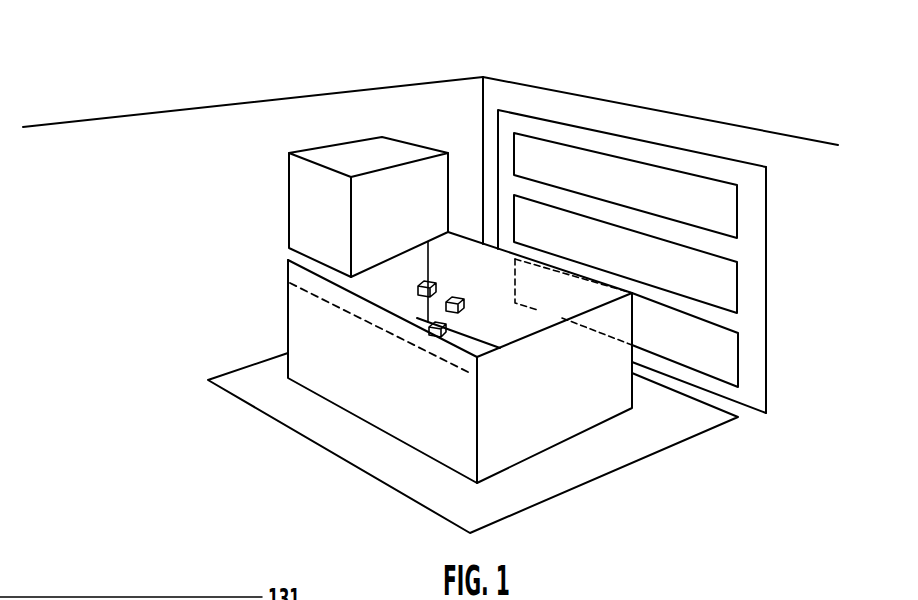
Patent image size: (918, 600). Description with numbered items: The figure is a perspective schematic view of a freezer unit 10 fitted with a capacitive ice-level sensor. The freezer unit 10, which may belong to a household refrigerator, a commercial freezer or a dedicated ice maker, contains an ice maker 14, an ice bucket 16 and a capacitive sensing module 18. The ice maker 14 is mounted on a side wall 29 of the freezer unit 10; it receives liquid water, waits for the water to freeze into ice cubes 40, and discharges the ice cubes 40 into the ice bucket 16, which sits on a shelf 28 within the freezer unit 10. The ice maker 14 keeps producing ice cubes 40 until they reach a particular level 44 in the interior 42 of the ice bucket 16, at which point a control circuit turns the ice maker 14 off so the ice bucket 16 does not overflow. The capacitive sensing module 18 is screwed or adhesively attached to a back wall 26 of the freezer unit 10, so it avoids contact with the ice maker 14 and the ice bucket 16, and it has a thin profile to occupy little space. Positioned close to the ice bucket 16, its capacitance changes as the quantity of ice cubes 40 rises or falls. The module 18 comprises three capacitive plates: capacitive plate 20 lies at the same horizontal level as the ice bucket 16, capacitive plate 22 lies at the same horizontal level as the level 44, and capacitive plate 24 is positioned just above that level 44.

The freezer unit 10 is at (305, 55).
The ice maker 14 is at (297, 222).
The ice bucket 16 is at (292, 378).
The capacitive sensing module 18 is at (767, 240).
The capacitive plate 20 is at (738, 363).
The capacitive plate 22 is at (738, 288).
The capacitive plate 24 is at (738, 202).
The back wall 26 is at (702, 138).
The shelf 28 is at (567, 470).
The side wall 29 is at (378, 115).
The ice cubes 40 is at (435, 283).
The interior 42 is at (506, 333).
The level 44 is at (497, 377).